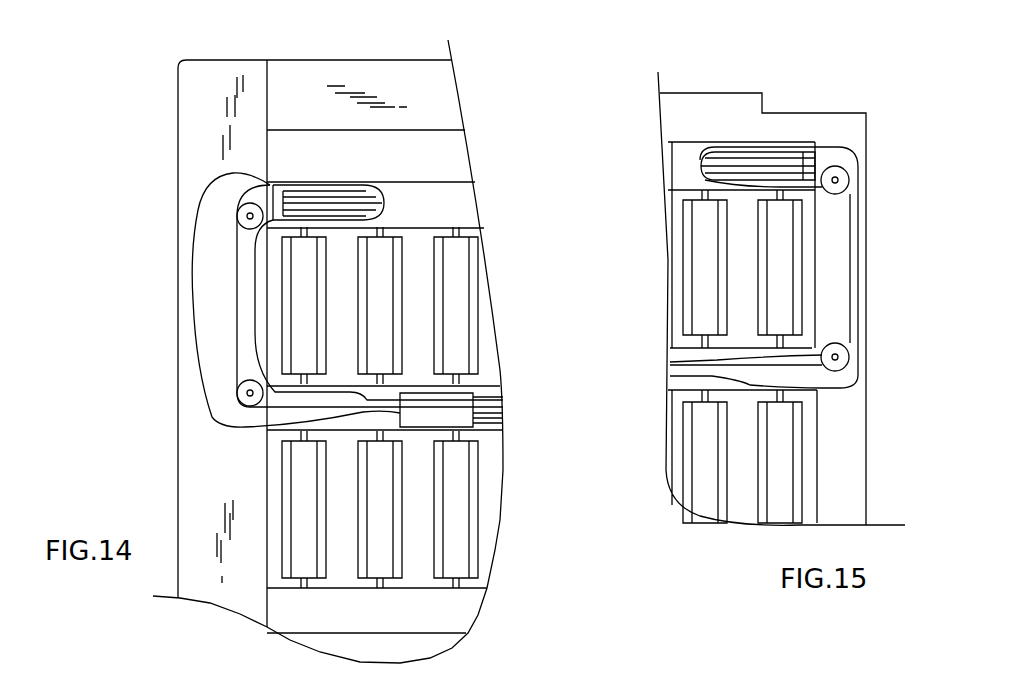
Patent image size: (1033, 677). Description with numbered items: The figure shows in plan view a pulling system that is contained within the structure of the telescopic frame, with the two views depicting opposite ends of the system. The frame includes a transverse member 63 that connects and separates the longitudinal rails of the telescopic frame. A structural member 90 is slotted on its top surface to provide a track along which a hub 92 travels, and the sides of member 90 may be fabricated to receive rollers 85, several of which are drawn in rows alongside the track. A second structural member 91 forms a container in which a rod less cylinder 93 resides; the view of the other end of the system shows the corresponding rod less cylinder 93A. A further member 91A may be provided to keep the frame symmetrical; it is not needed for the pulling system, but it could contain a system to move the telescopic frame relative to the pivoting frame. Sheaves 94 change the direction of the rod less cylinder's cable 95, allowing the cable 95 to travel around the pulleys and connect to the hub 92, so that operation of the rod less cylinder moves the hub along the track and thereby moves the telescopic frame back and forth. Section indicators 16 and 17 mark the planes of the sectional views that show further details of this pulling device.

In FIG. 14, the section line 16- 16 is at (545, 371).
In FIG. 14, the section line 17- 17 is at (260, 453).
In FIG. 14, the transverse member 63 is at (195, 490).
In FIG. 14, the rollers 85 is at (463, 530).
In FIG. 15, the rollers 85 is at (697, 208).
In FIG. 14, the structural member 90 is at (493, 392).
In FIG. 15, the structural member 90 is at (680, 353).
In FIG. 14, the structural member 91 is at (413, 190).
In FIG. 14, the member 91A is at (465, 615).
In FIG. 14, the hub 92 is at (468, 420).
In FIG. 14, the rod less cylinder 93 is at (278, 202).
In FIG. 15, the rod less cylinder 93A is at (785, 163).
In FIG. 14, the sheaves 94 is at (240, 210).
In FIG. 14, the cable 95 is at (236, 253).
In FIG. 15, the cable 95 is at (802, 372).